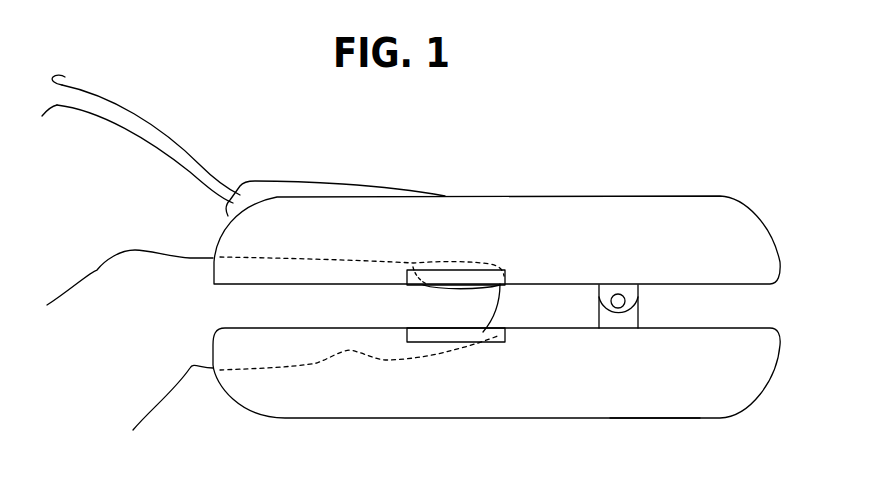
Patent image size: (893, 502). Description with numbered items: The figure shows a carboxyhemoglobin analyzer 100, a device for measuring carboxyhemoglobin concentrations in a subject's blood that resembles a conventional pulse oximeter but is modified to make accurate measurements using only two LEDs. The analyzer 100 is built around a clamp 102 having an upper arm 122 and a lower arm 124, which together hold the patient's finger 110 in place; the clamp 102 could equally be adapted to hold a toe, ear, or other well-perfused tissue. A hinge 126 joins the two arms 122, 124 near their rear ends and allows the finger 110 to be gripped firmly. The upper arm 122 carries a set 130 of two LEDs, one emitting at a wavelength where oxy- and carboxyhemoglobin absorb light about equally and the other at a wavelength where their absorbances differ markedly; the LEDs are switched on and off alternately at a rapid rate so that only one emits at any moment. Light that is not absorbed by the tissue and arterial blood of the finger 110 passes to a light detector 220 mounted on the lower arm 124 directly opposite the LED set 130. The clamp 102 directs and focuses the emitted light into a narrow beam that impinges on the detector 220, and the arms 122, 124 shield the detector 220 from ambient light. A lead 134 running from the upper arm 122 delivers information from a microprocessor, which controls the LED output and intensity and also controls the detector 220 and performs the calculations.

The carboxyhemoglobin analyzer 100 is at (711, 191).
The clamp 102 is at (610, 423).
The finger 110 is at (157, 265).
The arm 122 is at (763, 255).
The arm 124 is at (717, 387).
The hinge 126 is at (633, 302).
The set of two LEDs 130 is at (435, 270).
The lead 134 is at (140, 122).
The light detector 220 is at (417, 338).